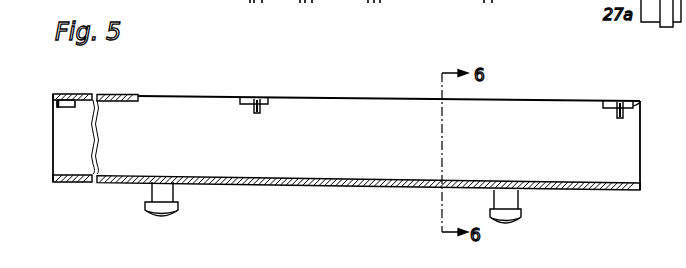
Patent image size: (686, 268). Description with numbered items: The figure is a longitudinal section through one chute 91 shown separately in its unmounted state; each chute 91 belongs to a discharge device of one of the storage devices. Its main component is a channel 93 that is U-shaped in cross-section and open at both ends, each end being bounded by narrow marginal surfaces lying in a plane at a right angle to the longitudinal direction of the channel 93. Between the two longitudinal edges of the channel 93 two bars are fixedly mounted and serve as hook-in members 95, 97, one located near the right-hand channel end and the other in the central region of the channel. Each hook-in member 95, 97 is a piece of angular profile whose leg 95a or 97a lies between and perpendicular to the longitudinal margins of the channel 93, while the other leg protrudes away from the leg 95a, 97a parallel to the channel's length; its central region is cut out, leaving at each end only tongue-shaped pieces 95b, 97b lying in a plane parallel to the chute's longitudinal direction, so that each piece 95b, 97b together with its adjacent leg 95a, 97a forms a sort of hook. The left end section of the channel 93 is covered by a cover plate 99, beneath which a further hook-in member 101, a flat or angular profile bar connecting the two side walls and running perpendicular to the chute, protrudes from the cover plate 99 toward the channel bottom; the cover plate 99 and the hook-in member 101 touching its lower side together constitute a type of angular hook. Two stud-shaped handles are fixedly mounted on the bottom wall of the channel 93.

The chute 91 is at (310, 92).
The channel 93 is at (230, 187).
The hook-in member 95 is at (636, 101).
The leg 95a is at (620, 118).
The tongue-shaped piece 95b is at (607, 101).
The hook-in member 97 is at (264, 99).
The leg 97a is at (257, 114).
The tongue-shaped piece 97b is at (243, 98).
The cover plate 99 is at (125, 93).
The hook-in member 101 is at (78, 93).